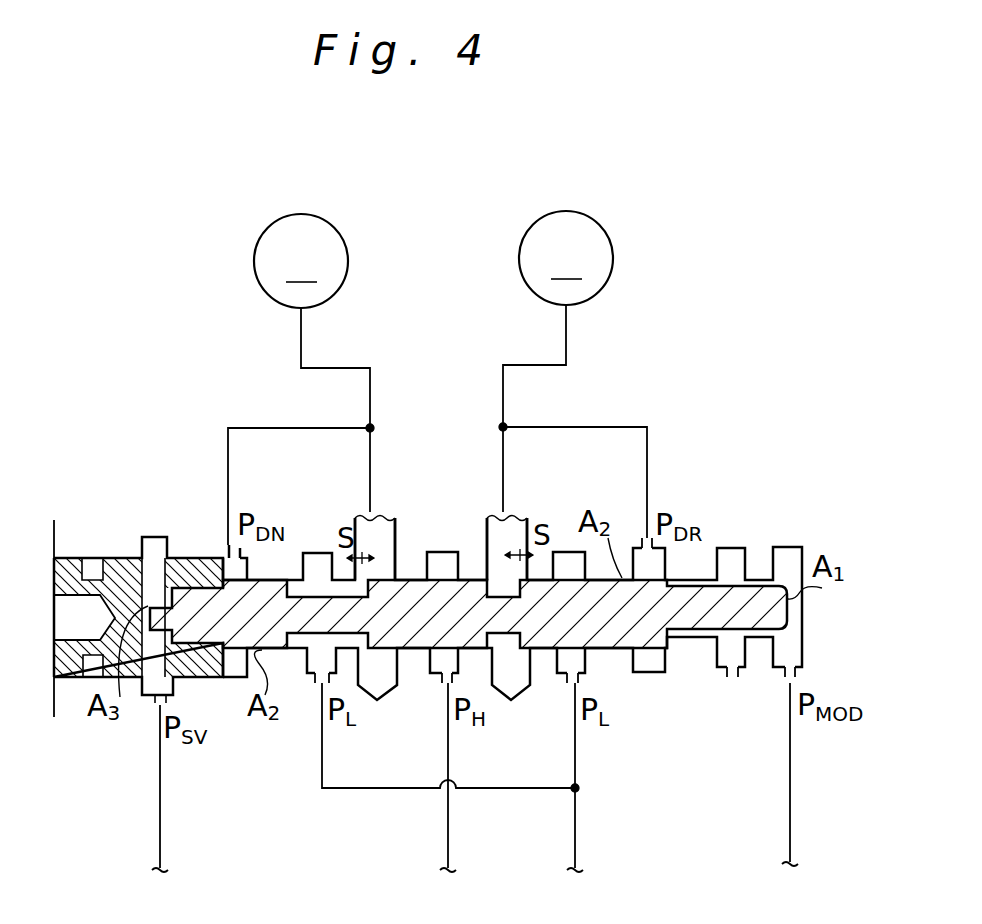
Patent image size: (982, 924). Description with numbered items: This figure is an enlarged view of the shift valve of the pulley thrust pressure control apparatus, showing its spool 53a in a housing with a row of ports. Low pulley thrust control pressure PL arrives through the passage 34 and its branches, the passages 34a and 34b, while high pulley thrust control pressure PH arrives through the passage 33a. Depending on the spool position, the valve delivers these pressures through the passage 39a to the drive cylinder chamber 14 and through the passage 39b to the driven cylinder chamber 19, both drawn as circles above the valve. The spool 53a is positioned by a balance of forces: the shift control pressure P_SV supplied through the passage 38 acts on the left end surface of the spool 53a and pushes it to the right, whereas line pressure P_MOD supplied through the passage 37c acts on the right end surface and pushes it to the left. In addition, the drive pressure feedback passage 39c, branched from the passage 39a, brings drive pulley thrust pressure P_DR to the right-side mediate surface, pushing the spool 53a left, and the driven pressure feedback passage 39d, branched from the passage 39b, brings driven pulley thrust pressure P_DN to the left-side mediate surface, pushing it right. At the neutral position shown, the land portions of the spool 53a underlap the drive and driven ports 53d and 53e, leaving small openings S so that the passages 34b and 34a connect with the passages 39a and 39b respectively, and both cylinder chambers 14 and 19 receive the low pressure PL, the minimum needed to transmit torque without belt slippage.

The drive cylinder chamber 14 is at (566, 258).
The driven cylinder chamber 19 is at (301, 261).
The passage 33a is at (448, 812).
The passage 34 is at (575, 842).
The passage 34a is at (322, 740).
The passage 34b is at (575, 748).
The passage 37c is at (790, 752).
The passage 38 is at (160, 807).
The passage 39a is at (566, 330).
The passage 39b is at (301, 335).
The drive pressure feedback passage 39c is at (647, 455).
The driven pressure feedback passage 39d is at (228, 456).
The spool 53a is at (693, 650).
The drive port 53d is at (477, 516).
The driven port 53e is at (386, 522).